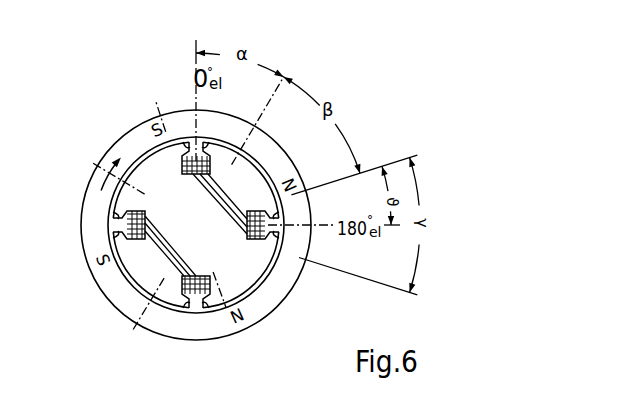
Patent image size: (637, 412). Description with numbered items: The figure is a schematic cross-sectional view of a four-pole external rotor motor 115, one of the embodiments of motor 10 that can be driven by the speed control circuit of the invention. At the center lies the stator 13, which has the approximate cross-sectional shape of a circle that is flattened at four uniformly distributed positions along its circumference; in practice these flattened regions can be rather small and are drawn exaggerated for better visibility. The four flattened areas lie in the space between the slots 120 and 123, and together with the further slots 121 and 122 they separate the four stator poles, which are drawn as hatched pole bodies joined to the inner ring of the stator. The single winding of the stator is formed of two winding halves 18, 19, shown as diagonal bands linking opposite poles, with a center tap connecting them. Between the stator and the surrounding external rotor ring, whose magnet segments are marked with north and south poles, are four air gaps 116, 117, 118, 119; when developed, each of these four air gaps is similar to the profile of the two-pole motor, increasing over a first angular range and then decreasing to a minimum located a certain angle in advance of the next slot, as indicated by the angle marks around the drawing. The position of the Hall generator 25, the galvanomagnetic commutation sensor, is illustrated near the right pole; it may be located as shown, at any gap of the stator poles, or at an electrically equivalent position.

The motor 10 is at (268, 172).
The stator 13 is at (225, 224).
The winding half 18 is at (214, 203).
The winding half 19 is at (173, 246).
The Hall generator 25 is at (290, 233).
The four-pole external rotor motor 115 is at (80, 194).
The air gap 116 is at (270, 150).
The air gap 117 is at (287, 253).
The air gap 118 is at (138, 293).
The air gap 119 is at (130, 168).
The slot 120 is at (209, 138).
The slot 121 is at (296, 215).
The slot 122 is at (196, 306).
The slot 123 is at (118, 224).